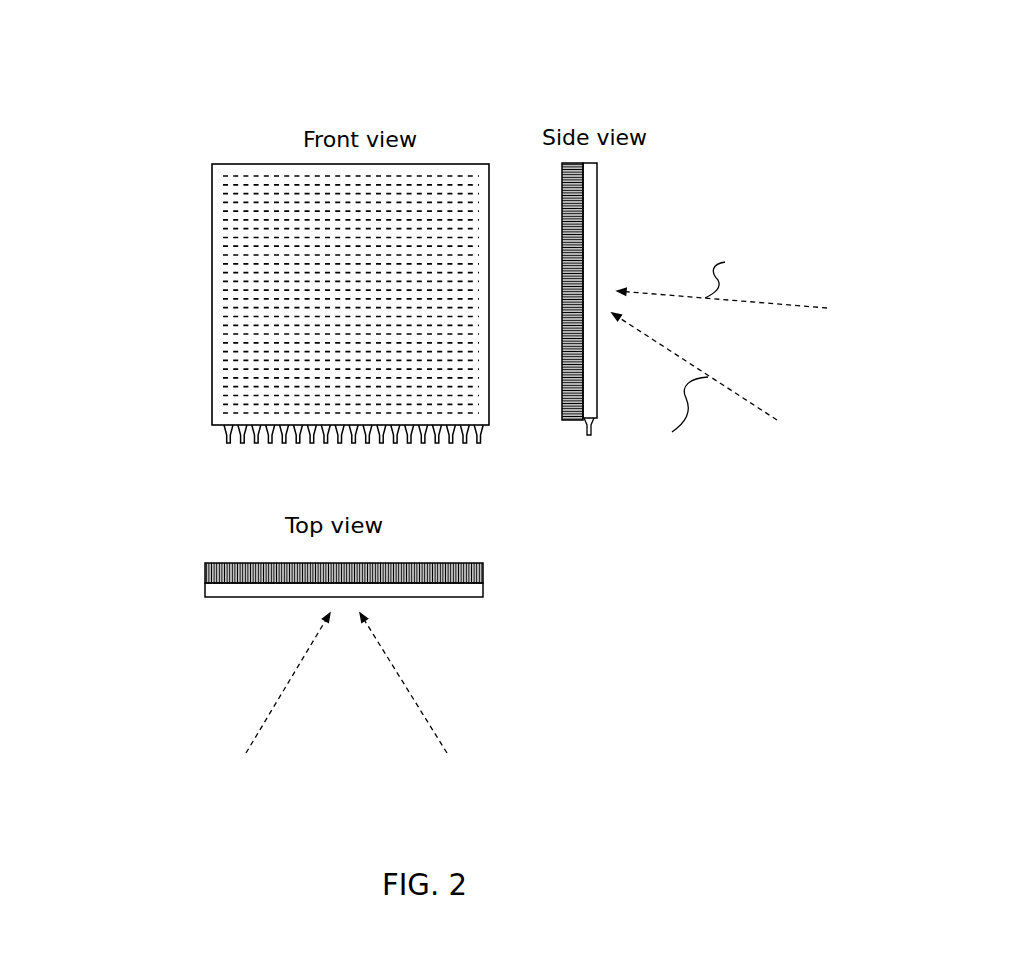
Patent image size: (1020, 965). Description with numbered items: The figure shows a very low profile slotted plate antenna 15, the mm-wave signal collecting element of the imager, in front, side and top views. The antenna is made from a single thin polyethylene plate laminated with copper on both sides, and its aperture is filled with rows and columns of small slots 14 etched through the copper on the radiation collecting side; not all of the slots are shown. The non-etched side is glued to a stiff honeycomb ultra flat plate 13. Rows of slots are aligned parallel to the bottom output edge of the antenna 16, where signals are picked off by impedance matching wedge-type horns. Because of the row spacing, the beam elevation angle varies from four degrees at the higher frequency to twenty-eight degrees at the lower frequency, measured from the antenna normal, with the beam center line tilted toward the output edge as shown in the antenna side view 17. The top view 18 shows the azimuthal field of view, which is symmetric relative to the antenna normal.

The honeycomb ultra flat plate 13 is at (558, 382).
The slots 14 is at (257, 230).
The slotted antenna 15 is at (188, 313).
The bottom output edge of the antenna 16 is at (217, 435).
The antenna side view 17 is at (677, 118).
The top view 18 is at (590, 633).